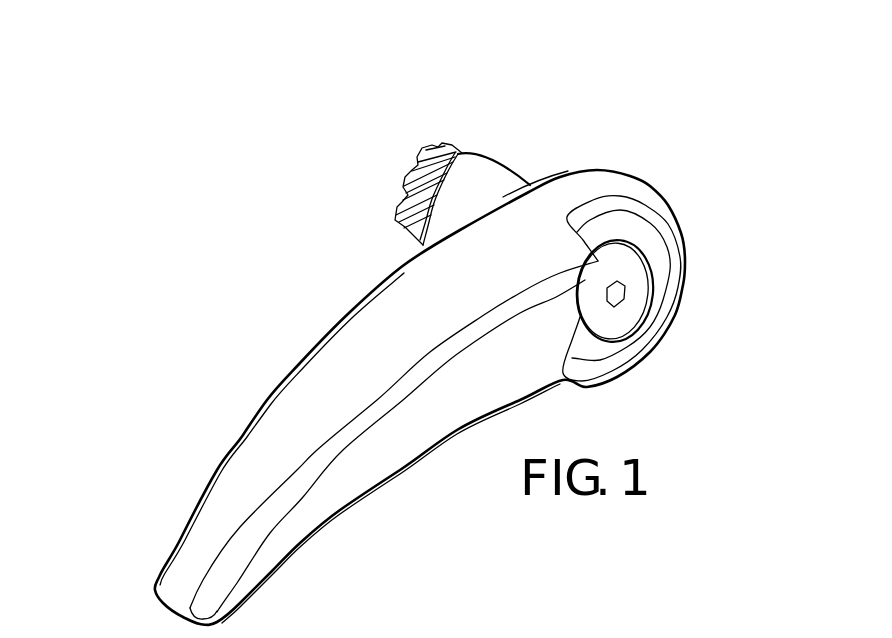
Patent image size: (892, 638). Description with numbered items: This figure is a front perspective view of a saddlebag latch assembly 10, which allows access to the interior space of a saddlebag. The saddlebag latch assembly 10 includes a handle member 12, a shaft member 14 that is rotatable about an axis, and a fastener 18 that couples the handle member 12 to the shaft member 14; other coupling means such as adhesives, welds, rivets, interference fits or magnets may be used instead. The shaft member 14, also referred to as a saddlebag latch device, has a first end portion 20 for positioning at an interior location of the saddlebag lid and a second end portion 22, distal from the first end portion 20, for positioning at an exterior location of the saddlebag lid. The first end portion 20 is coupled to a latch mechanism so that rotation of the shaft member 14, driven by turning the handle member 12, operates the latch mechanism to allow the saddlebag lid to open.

The saddlebag latch assembly 10 is at (156, 152).
The handle member 12 is at (391, 494).
The shaft member 14 is at (552, 87).
The fastener 18 is at (633, 278).
The first end portion 20 is at (397, 175).
The second end portion 22 is at (553, 174).